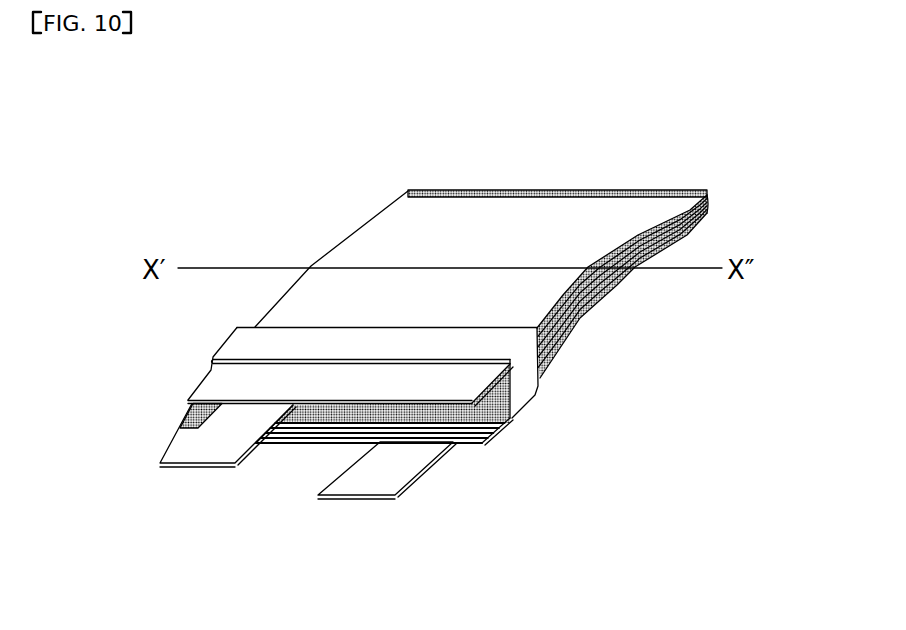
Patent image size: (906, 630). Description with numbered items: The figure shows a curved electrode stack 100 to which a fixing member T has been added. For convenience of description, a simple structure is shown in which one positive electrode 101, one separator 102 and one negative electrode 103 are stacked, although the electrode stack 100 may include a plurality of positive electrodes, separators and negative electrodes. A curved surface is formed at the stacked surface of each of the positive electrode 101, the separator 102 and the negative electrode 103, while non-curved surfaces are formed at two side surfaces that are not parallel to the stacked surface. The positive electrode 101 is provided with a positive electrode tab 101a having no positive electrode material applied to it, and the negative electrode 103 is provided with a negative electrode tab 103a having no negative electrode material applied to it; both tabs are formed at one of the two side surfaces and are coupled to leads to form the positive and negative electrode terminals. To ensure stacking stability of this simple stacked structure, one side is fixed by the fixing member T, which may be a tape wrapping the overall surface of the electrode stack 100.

The electrode stack 100 is at (423, 358).
The positive electrode 101 is at (488, 433).
The positive electrode tab 101a is at (358, 477).
The separator 102 is at (703, 195).
The negative electrode 103 is at (612, 207).
The negative electrode tab 103a is at (213, 456).
The fixing member T is at (293, 362).